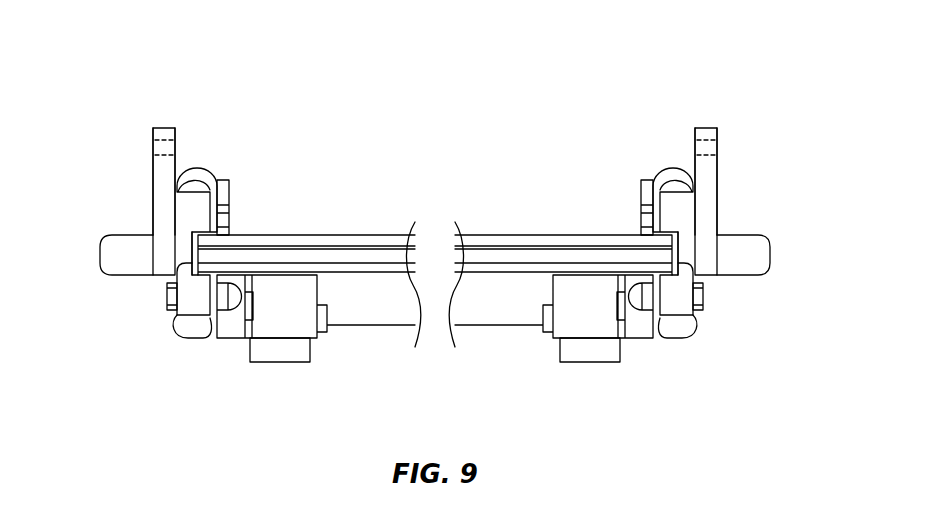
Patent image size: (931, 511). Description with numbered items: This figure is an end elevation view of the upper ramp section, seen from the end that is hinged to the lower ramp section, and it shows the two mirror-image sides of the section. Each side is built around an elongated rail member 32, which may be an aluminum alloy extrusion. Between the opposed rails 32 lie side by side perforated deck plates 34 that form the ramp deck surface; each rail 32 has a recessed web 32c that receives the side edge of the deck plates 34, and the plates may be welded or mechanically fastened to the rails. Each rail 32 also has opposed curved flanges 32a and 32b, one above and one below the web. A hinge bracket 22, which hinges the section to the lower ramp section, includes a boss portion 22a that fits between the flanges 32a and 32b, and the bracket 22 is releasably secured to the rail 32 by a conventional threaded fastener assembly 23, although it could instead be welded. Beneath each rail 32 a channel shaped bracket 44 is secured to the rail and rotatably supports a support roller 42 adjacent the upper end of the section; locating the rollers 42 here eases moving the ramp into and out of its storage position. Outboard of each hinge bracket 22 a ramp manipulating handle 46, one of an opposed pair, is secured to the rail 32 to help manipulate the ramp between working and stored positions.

The hinge bracket 22 is at (162, 128).
The boss portion 22a is at (160, 198).
The threaded fastener assembly 23 is at (167, 306).
The rail member 32 is at (167, 280).
The curved flange 32a is at (202, 168).
The curved flange 32b is at (200, 343).
The recessed web 32c is at (190, 237).
The deck plate 34 is at (310, 235).
The support roller 42 is at (275, 363).
The channel shaped bracket 44 is at (318, 300).
The ramp manipulating handle 46 is at (95, 258).